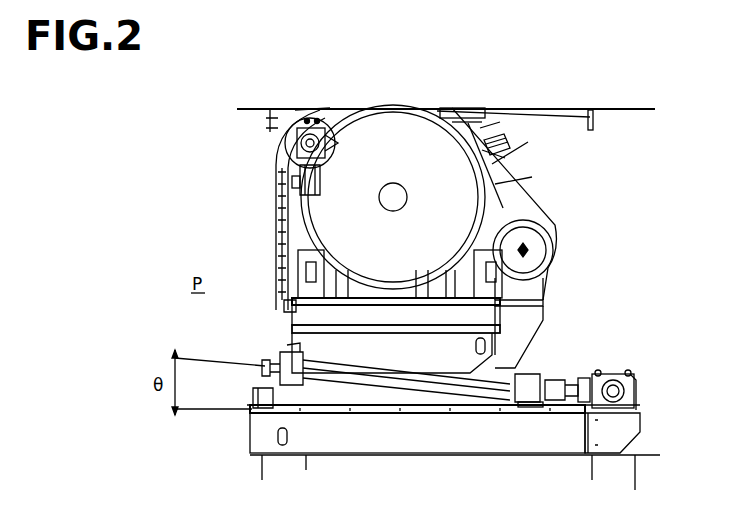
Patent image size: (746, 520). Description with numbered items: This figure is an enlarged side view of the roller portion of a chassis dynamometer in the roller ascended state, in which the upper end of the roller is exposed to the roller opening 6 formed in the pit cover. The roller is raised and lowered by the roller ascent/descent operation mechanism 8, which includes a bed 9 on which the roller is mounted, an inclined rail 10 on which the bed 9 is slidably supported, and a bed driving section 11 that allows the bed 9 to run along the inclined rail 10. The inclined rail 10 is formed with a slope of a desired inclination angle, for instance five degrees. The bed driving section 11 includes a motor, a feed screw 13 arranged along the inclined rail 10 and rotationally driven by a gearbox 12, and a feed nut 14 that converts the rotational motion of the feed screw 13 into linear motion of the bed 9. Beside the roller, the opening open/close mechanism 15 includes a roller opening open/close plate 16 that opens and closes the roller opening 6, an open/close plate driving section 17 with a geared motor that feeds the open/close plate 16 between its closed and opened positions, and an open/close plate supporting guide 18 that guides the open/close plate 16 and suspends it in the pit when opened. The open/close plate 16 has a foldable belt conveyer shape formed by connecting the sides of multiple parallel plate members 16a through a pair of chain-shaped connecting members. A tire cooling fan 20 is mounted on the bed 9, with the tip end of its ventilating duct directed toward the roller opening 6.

The roller opening 6 is at (421, 105).
The roller ascent/descent operation mechanism 8 is at (495, 487).
The bed 9 is at (387, 347).
The inclined rail 10 is at (430, 400).
The bed driving section 11 is at (478, 396).
The gearbox 12 is at (612, 378).
The feed screw 13 is at (513, 368).
The feed nut 14 is at (293, 373).
The opening open/close mechanism 15 is at (183, 73).
The roller opening open/close plate 16 is at (268, 176).
The plate members 16a is at (275, 220).
The open/close plate driving section 17 is at (295, 150).
The open/close plate supporting guide 18 is at (338, 108).
The tire cooling fan 20 is at (535, 238).